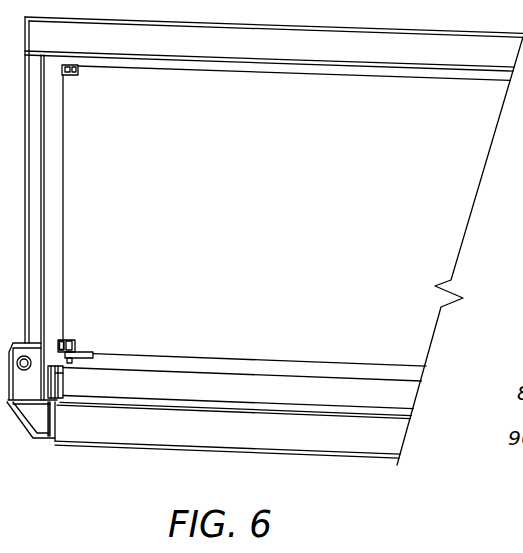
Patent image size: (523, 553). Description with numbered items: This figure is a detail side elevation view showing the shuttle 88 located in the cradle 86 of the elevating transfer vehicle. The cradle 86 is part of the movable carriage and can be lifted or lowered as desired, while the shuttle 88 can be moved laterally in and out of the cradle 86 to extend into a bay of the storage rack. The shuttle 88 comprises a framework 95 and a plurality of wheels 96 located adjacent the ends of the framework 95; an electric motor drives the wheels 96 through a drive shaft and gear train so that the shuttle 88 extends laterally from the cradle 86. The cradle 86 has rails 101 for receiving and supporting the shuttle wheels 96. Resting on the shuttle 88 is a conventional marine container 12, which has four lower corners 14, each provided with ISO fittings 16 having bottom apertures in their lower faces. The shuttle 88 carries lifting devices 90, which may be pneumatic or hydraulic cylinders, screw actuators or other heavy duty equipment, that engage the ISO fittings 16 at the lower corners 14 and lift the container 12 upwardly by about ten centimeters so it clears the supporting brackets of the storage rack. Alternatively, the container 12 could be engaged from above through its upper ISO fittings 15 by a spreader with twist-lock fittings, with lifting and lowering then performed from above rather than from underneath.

The container 12 is at (425, 248).
The cradle 86 is at (307, 432).
The shuttle 88 is at (211, 393).
The framework 95 is at (160, 380).
The upper ISO fittings 15 is at (78, 73).
The lower corners 14 is at (75, 342).
The ISO fittings 16 is at (65, 341).
The lifting devices 90 is at (93, 351).
The wheels 96 is at (63, 369).
The rails 101 is at (50, 398).